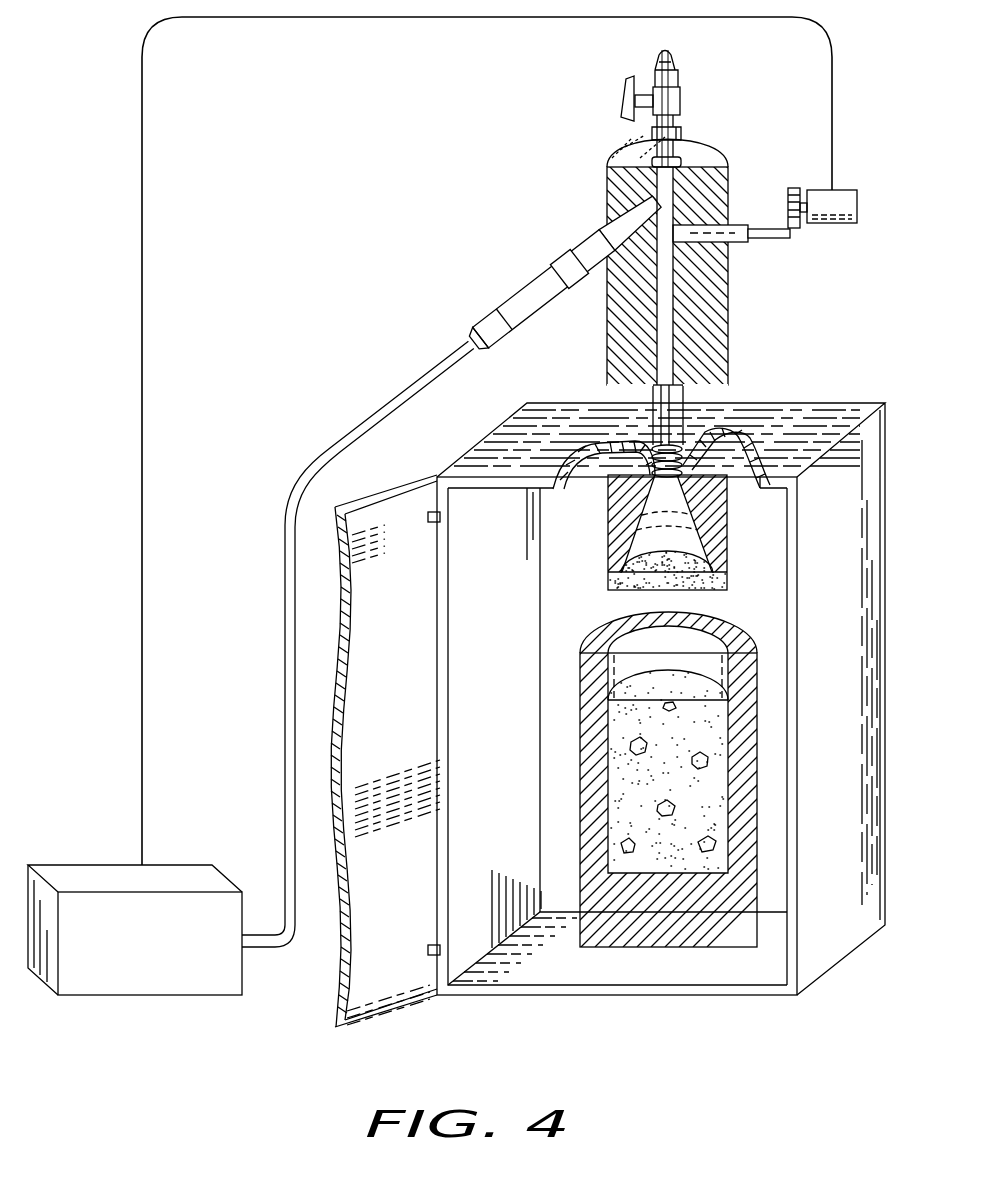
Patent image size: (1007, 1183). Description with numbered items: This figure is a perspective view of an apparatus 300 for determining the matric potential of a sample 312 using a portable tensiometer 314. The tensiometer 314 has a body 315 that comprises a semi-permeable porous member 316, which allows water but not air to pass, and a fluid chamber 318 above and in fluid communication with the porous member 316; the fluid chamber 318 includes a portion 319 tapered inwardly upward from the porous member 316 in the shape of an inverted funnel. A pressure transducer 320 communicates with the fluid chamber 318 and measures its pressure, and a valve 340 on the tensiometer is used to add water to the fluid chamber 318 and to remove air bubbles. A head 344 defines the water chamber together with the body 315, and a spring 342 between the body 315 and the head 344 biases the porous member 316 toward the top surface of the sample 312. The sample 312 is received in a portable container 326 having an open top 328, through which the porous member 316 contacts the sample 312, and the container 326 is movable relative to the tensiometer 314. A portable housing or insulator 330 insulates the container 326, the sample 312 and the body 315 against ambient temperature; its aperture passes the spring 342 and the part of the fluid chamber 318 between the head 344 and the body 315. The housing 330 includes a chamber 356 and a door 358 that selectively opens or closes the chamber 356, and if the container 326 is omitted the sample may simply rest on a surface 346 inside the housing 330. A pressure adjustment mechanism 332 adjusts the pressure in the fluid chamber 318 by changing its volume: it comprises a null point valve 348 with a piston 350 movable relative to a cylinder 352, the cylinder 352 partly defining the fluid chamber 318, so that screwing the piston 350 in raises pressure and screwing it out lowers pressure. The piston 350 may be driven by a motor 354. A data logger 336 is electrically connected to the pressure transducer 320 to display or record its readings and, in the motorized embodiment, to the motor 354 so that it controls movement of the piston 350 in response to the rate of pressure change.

The apparatus 300 is at (727, 134).
The sample 312 is at (702, 727).
The portable tensiometer 314 is at (728, 180).
The body 315 is at (727, 505).
The porous member 316 is at (715, 597).
The fluid chamber 318 is at (667, 320).
The tapered portion 319 is at (655, 527).
The pressure transducer 320 is at (525, 292).
The container 326 is at (718, 910).
The open top 328 is at (602, 647).
The insulator 330 is at (823, 910).
The pressure adjustment mechanism 332 is at (822, 248).
The data logger 336 is at (98, 877).
The valve 340 is at (619, 84).
The spring 342 is at (688, 462).
The head 344 is at (605, 192).
The surface 346 is at (533, 973).
The null point valve 348 is at (741, 258).
The piston 350 is at (797, 256).
The cylinder 352 is at (756, 230).
The motor 354 is at (858, 204).
The chamber 356 is at (778, 768).
The door 358 is at (387, 533).